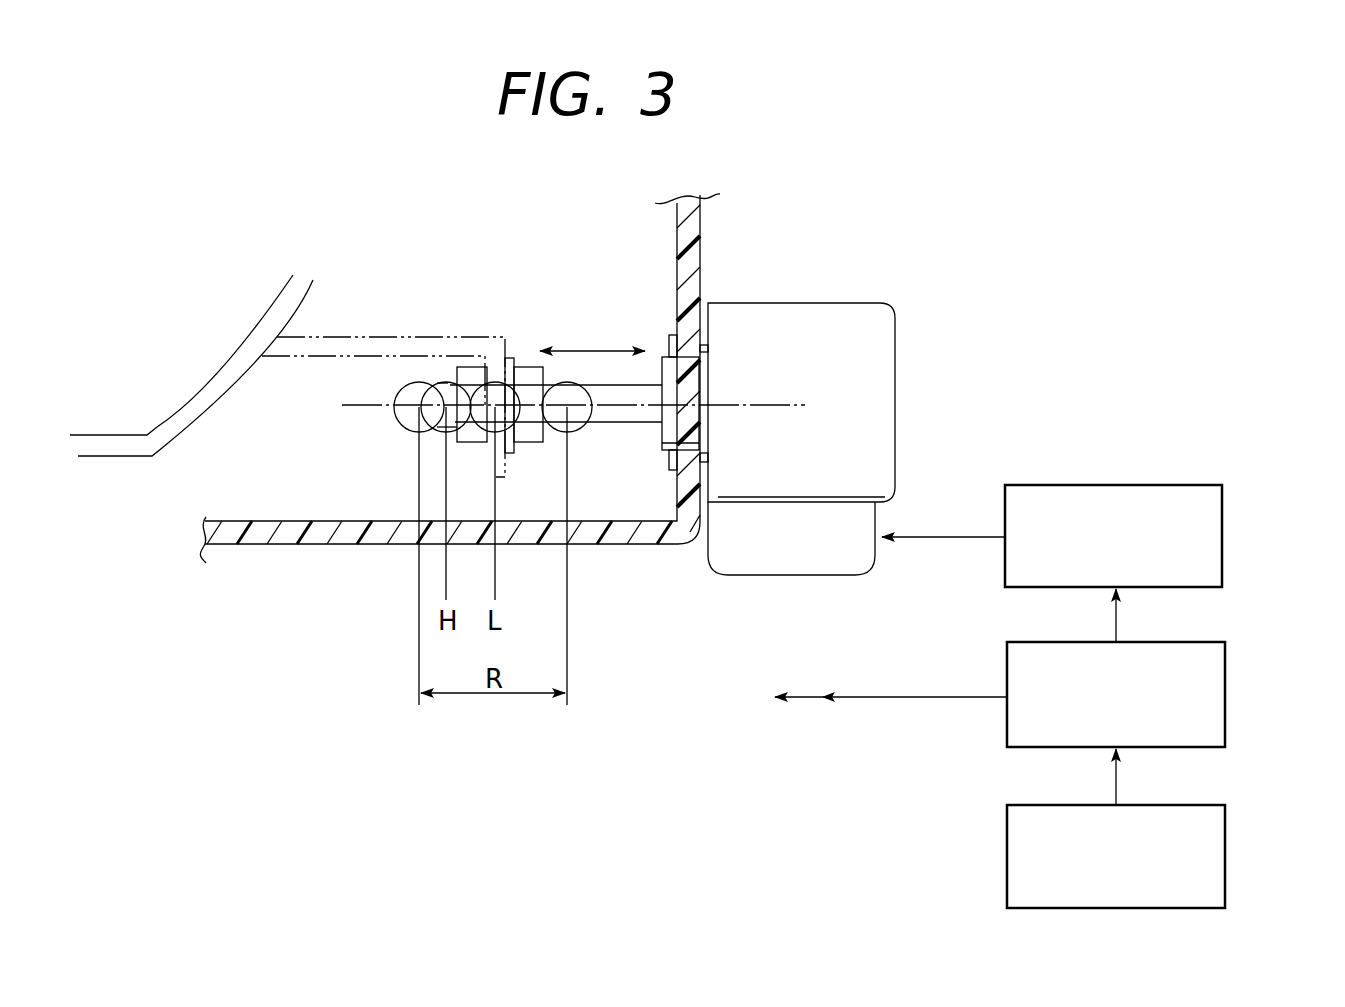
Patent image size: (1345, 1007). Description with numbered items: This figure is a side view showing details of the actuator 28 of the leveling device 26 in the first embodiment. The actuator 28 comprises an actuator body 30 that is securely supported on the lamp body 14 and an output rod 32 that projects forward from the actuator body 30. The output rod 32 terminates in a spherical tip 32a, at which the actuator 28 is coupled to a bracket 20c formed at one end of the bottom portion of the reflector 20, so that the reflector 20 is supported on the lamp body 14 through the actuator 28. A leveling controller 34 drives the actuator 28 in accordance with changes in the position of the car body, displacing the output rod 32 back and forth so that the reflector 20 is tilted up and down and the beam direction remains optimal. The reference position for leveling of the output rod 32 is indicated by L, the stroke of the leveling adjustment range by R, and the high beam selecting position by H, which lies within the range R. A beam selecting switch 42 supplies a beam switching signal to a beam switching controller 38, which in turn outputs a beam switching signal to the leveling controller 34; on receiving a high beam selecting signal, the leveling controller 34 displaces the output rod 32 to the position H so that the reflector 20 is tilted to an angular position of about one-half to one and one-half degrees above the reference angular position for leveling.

The lamp body 14 is at (318, 548).
The reflector 20 is at (210, 378).
The bracket 20c is at (447, 336).
The leveling device 26 is at (989, 337).
The actuator 28 is at (776, 302).
The actuator body 30 is at (843, 312).
The output rod 32 is at (598, 416).
The spherical tip 32a is at (478, 422).
The leveling controller 34 is at (1222, 518).
The beam switching controller 38 is at (1225, 690).
The beam selecting switch 42 is at (1225, 866).